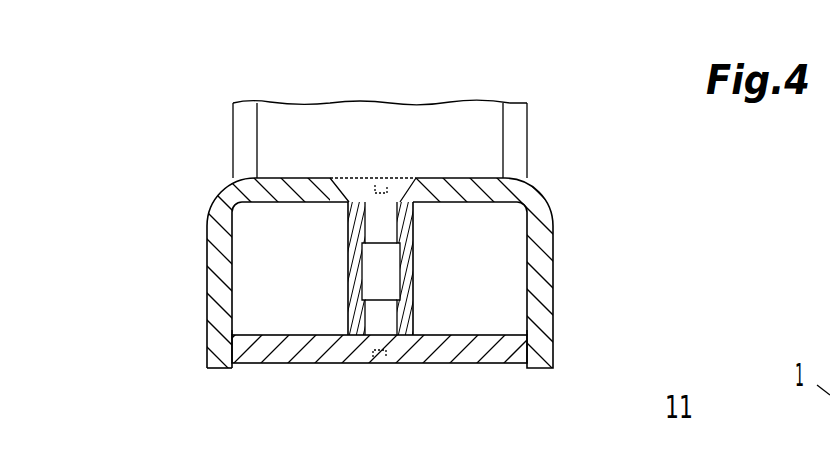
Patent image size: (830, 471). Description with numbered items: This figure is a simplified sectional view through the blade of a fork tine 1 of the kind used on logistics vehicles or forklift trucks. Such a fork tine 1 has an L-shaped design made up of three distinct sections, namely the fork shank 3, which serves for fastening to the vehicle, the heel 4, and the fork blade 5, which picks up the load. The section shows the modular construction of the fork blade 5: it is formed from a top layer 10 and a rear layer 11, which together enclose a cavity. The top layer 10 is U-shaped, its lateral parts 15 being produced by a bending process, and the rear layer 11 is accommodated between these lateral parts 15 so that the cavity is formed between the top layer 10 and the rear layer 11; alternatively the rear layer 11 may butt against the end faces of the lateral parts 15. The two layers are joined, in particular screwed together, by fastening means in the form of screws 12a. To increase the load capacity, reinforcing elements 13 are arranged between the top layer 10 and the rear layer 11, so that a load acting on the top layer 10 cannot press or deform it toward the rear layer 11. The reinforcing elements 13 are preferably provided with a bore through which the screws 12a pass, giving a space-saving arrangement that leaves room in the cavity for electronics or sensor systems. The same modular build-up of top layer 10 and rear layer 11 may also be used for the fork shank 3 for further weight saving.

The fork tine 1 is at (190, 168).
The fork shank 3 is at (398, 125).
The top layer 10 is at (463, 188).
The fork blade 5 is at (542, 190).
The heel 4 is at (457, 237).
The lateral parts 15 is at (222, 266).
The rear layer 11 is at (287, 348).
The reinforcing elements 13 is at (415, 262).
The screws 12a is at (360, 190).